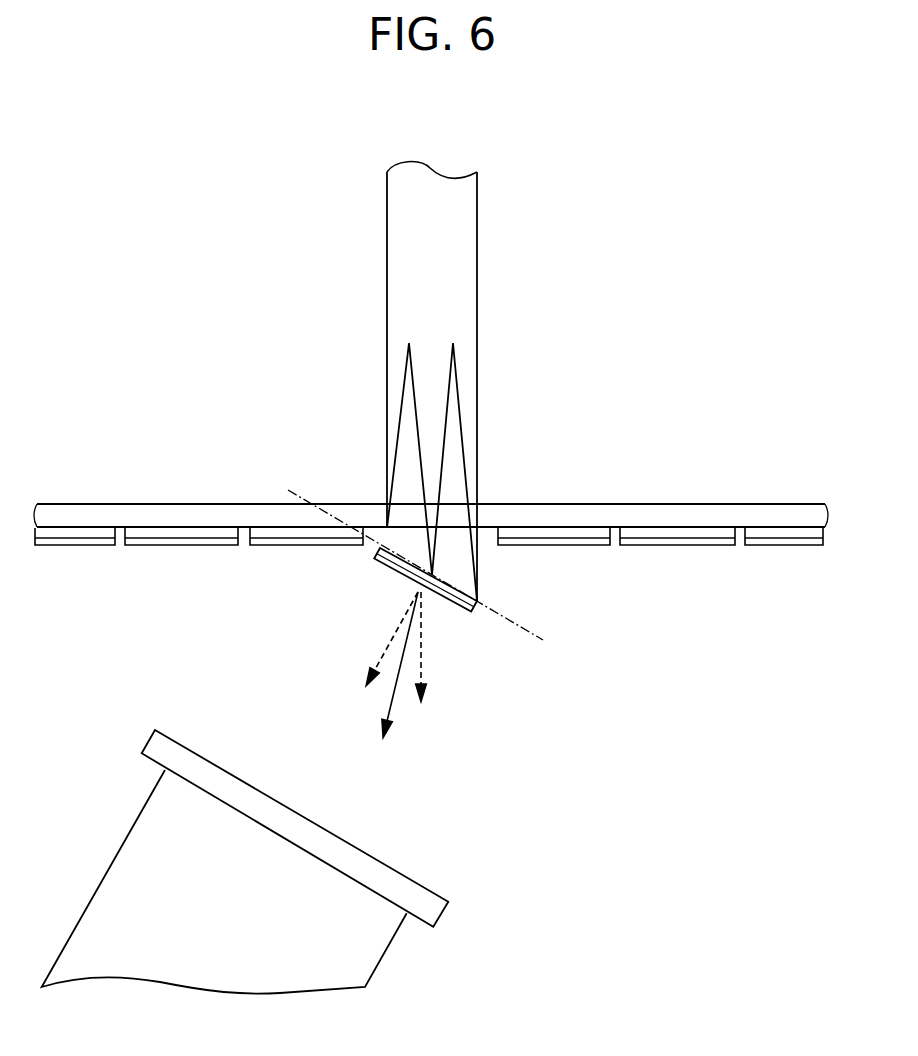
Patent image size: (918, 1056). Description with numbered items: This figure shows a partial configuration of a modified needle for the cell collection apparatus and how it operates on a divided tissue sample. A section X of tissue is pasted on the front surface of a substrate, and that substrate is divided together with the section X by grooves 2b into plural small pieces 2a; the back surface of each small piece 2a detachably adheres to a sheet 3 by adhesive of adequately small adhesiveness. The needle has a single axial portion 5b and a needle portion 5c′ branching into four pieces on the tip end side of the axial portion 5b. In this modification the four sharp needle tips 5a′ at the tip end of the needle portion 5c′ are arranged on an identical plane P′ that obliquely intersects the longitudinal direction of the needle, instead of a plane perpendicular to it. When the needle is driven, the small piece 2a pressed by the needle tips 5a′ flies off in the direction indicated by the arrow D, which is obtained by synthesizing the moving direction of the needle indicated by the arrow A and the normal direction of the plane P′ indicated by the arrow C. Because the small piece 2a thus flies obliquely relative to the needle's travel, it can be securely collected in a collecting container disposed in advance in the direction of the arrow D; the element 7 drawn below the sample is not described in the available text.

The axial portion 5b is at (387, 250).
The needle portion 5c′ is at (387, 393).
The sheet 3 is at (160, 504).
The grooves (dividing lines) 2b is at (245, 546).
The small piece 2a is at (480, 613).
The needle tips 5a′ is at (380, 566).
The section X is at (445, 598).
The plane P′ is at (426, 573).
The arrow C is at (385, 656).
The arrow A is at (422, 664).
The arrow D is at (395, 679).
The guide member 7 is at (128, 835).